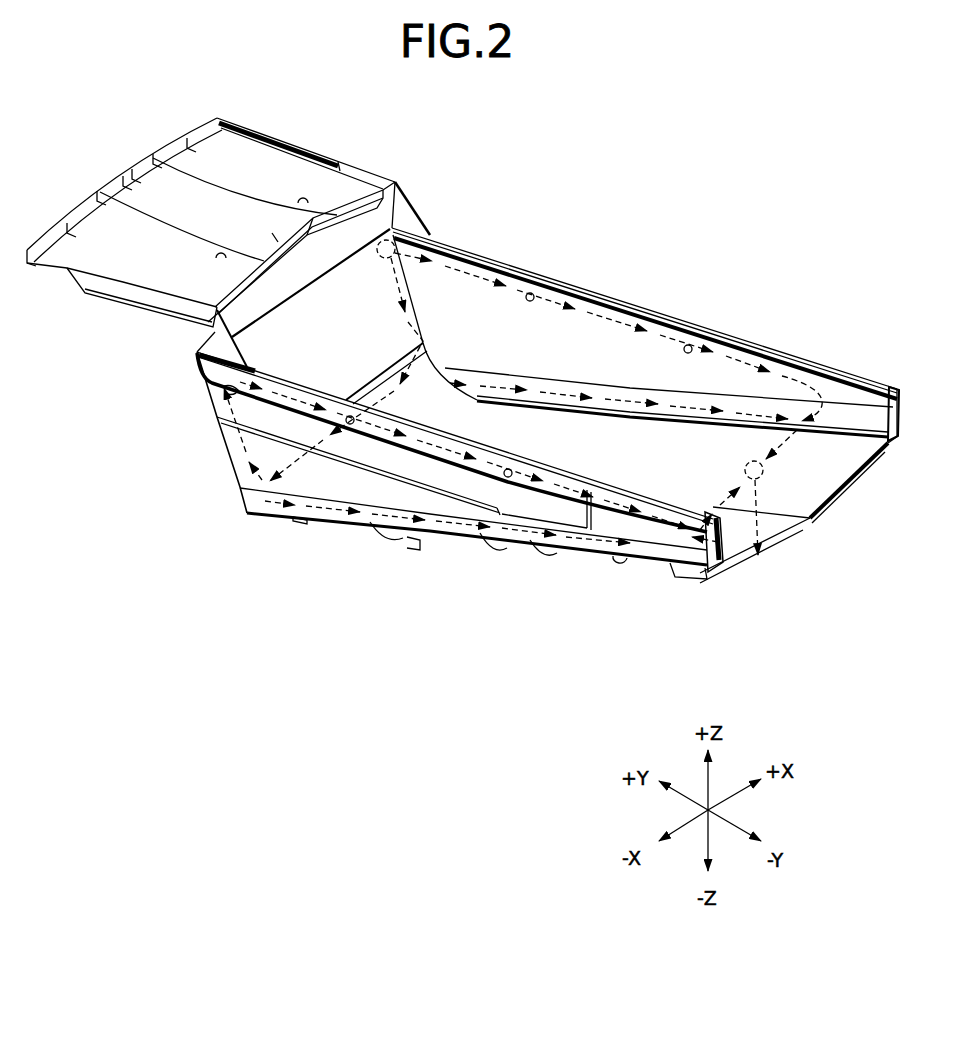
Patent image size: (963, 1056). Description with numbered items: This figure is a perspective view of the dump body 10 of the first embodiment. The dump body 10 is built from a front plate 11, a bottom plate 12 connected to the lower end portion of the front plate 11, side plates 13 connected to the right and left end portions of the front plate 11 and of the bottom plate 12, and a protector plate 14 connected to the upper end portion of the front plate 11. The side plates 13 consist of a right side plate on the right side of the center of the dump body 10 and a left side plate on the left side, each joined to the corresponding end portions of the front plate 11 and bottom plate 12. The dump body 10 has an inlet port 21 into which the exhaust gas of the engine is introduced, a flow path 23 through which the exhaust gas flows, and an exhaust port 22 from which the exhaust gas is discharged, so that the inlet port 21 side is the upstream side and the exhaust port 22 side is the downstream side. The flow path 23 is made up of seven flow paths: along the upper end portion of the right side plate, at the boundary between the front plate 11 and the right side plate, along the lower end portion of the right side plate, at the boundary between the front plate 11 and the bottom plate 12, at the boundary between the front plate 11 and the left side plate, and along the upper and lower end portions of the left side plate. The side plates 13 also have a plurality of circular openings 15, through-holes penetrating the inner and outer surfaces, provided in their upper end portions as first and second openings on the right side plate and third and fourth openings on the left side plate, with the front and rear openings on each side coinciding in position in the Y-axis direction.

The dump body 10 is at (584, 213).
The front plate 11 is at (343, 285).
The bottom plate 12 is at (556, 445).
The side plates 13 is at (598, 332).
The protector plate 14 is at (147, 184).
The openings 15 is at (531, 293).
The inlet port 21 is at (392, 226).
The exhaust port 22 is at (768, 471).
The flow path 23 is at (403, 287).